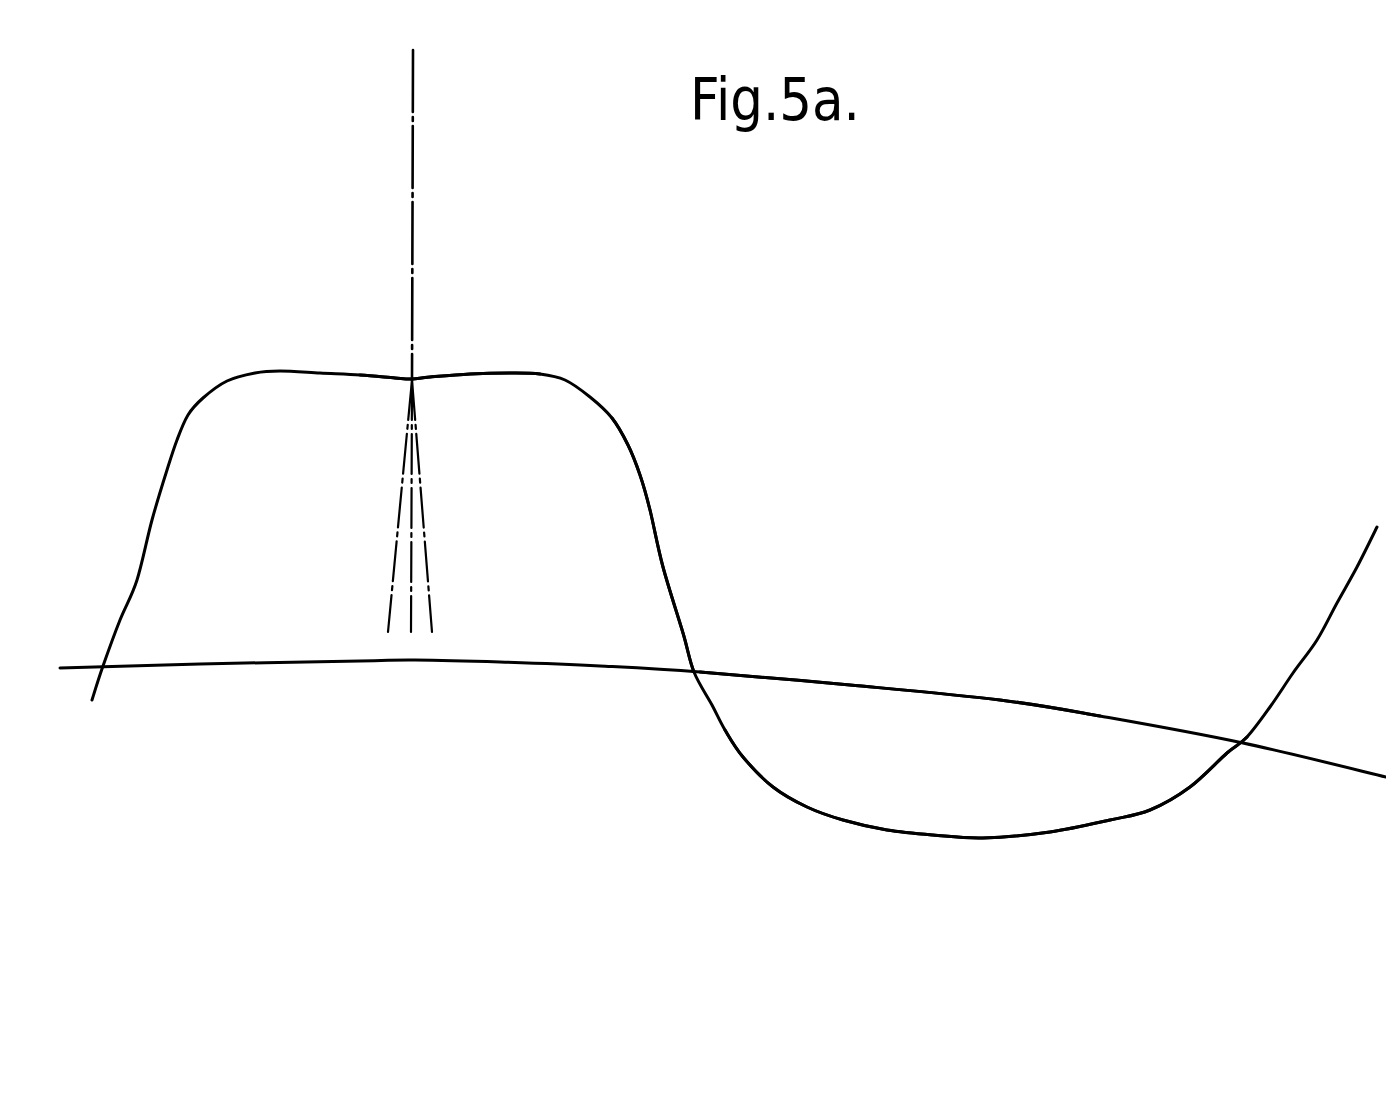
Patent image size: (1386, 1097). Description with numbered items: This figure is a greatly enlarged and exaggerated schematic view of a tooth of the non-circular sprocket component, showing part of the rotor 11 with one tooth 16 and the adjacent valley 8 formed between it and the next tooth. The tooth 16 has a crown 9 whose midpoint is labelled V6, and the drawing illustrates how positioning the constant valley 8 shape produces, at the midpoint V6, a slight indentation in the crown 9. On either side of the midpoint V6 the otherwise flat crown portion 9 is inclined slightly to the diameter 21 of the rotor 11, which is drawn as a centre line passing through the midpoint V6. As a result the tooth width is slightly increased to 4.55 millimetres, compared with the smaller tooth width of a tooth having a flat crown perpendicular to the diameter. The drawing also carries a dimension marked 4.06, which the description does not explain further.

The diameter 21 is at (415, 125).
The midpoint V6 is at (430, 377).
The crown 9 is at (503, 373).
The tooth 16 is at (608, 485).
The valley 8 is at (950, 535).
The base circle radius 4.06 is at (982, 697).
The tooth width 4.55 is at (543, 703).
The rotor 11 is at (630, 950).